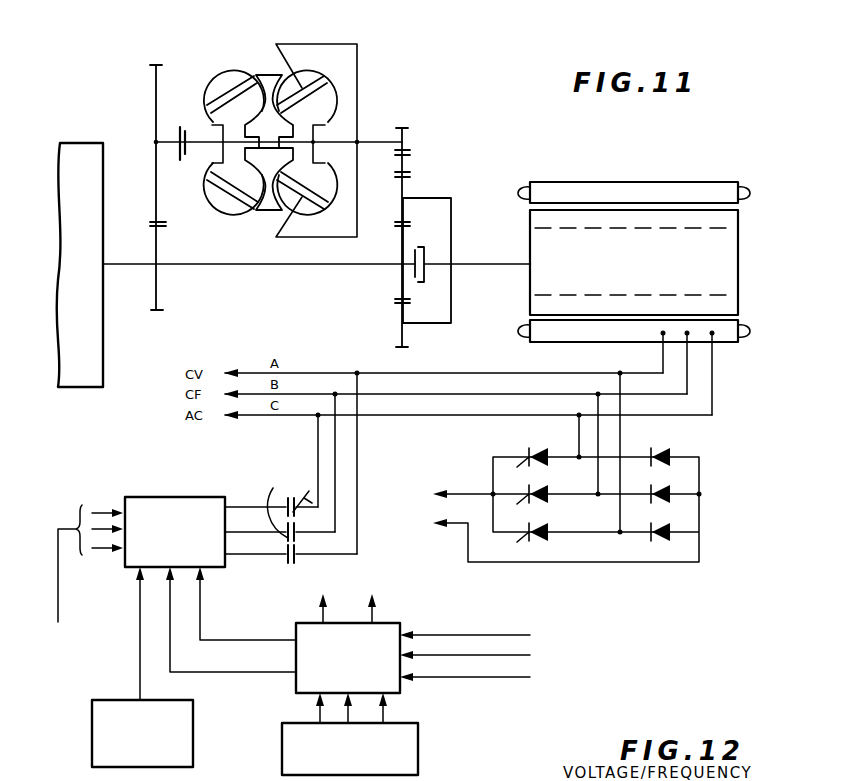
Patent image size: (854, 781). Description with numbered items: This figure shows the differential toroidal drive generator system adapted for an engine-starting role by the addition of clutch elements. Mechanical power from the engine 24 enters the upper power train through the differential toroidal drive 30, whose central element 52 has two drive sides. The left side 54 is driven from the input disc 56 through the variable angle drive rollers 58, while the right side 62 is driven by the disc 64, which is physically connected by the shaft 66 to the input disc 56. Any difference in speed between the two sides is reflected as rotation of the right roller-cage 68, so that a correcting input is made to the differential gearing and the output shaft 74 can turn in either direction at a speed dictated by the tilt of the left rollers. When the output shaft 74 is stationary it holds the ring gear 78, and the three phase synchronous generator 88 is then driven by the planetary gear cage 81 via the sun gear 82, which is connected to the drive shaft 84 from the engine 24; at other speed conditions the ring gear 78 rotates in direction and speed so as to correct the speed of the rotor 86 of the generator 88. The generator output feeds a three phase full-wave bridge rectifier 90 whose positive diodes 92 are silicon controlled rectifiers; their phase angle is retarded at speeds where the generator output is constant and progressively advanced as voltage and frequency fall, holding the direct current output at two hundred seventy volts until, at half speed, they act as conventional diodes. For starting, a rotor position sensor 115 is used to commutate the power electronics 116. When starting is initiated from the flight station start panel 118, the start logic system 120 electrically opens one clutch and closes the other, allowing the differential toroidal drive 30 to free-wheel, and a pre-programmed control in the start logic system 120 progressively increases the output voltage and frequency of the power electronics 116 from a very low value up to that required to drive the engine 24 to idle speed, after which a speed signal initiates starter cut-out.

The engine 24 is at (67, 143).
The differential toroidal drive 30 is at (402, 45).
The central element 52 is at (266, 76).
The left side of central element 54 is at (265, 217).
The input disc 56 is at (206, 87).
The variable angle drive rollers 58 is at (243, 86).
The right side of central element 62 is at (315, 69).
The disc 64 is at (357, 237).
The shaft 66 is at (197, 134).
The right roller-cage 68 is at (328, 44).
The output shaft 74 is at (378, 140).
The ring gear 78 is at (405, 165).
The planetary gear cage 81 is at (453, 310).
The sun gear 82 is at (396, 290).
The drive shaft 84 is at (185, 264).
The rotor 86 is at (650, 279).
The three phase synchronous generator 88 is at (745, 327).
The three phase full-wave bridge rectifier 90 is at (572, 493).
The positive diodes (silicon controlled rectifiers) 92 is at (535, 451).
The rotor position sensor 115 is at (195, 742).
The power electronics 116 is at (180, 497).
The flight station start panel 118 is at (420, 753).
The start logic system 120 is at (398, 623).